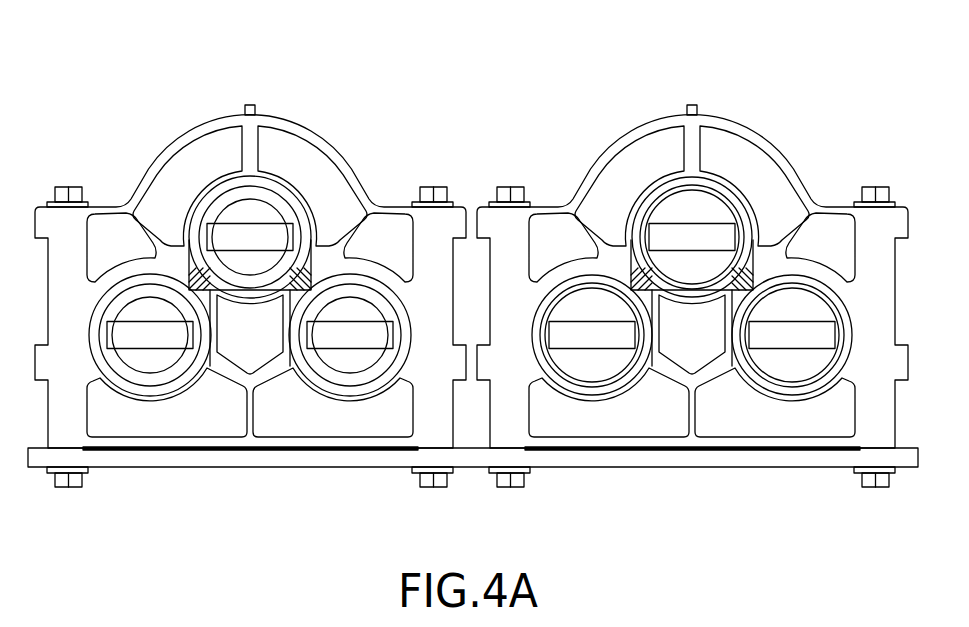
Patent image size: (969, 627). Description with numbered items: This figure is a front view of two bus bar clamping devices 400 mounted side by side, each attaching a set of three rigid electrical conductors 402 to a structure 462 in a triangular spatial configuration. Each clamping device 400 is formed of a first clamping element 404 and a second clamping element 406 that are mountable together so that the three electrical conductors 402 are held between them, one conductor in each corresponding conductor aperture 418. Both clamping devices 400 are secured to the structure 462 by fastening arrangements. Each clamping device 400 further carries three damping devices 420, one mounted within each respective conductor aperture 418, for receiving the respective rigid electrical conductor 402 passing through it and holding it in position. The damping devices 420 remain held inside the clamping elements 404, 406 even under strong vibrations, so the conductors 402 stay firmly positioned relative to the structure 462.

The clamping device 400 is at (228, 78).
The electrical conductor 402 is at (702, 203).
The first clamping element 404 is at (398, 425).
The second clamping element 406 is at (273, 130).
The conductor aperture 418 is at (767, 384).
The damping device 420 is at (787, 386).
The structure 462 is at (552, 453).